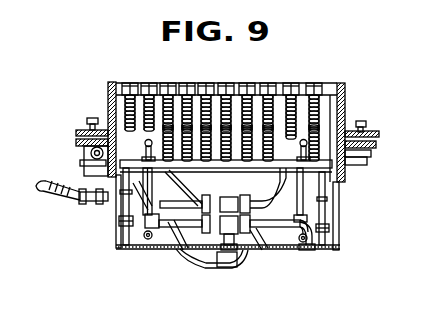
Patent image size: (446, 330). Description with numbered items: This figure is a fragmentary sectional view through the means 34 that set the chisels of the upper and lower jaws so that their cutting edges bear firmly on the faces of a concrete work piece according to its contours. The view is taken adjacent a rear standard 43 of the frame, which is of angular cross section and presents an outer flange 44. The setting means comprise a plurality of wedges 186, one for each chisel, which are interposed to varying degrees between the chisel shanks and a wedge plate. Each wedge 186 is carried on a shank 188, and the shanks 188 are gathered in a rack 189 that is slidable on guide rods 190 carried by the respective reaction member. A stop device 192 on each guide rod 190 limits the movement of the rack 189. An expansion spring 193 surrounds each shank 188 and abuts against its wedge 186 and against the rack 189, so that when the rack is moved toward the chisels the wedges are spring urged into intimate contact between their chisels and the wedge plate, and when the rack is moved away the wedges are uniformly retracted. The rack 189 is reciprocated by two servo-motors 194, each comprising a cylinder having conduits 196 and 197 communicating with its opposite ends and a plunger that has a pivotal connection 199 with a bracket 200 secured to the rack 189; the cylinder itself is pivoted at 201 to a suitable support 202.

The means to set the chisels 34 is at (138, 238).
The rear standard 43 is at (75, 142).
The outer flange 44 is at (374, 148).
The wedge 186 is at (148, 82).
The shank 188 is at (125, 127).
The rack 189 is at (348, 178).
The guide rod 190 is at (118, 216).
The stop device 192 is at (118, 232).
The expansion spring 193 is at (306, 142).
The servo-motor 194 is at (153, 218).
The conduit 196 is at (262, 228).
The conduit 197 is at (268, 182).
The pivotal connection 199 is at (310, 153).
The bracket 200 is at (367, 160).
The pivot 201 is at (300, 237).
The support 202 is at (306, 250).